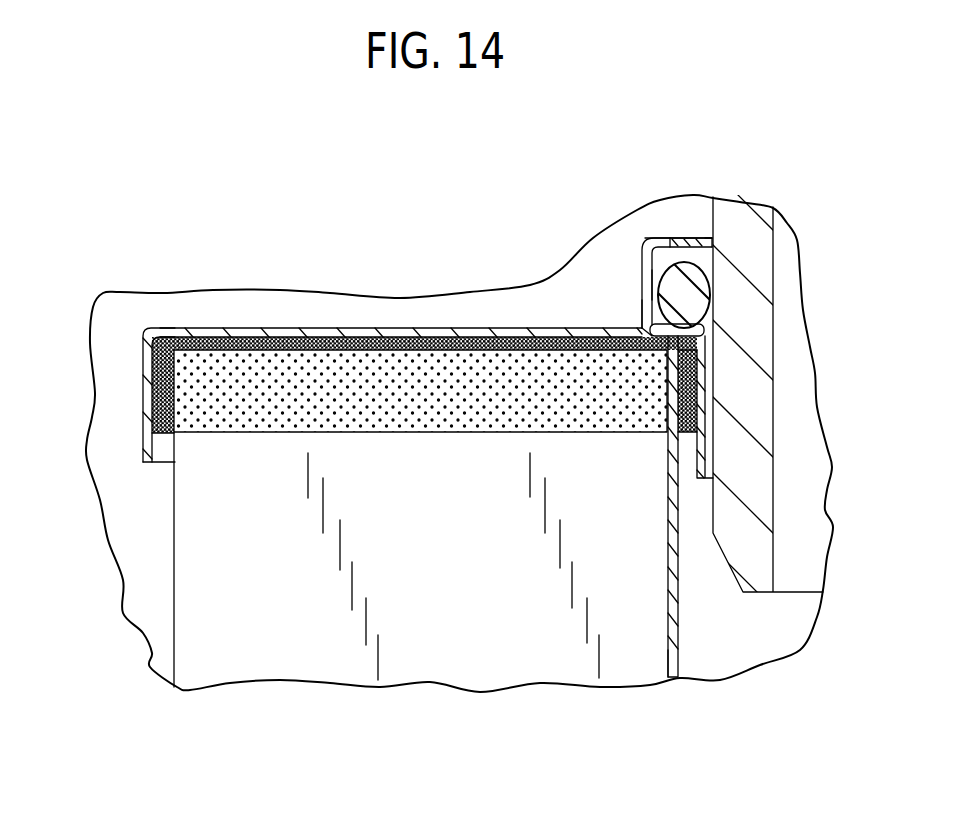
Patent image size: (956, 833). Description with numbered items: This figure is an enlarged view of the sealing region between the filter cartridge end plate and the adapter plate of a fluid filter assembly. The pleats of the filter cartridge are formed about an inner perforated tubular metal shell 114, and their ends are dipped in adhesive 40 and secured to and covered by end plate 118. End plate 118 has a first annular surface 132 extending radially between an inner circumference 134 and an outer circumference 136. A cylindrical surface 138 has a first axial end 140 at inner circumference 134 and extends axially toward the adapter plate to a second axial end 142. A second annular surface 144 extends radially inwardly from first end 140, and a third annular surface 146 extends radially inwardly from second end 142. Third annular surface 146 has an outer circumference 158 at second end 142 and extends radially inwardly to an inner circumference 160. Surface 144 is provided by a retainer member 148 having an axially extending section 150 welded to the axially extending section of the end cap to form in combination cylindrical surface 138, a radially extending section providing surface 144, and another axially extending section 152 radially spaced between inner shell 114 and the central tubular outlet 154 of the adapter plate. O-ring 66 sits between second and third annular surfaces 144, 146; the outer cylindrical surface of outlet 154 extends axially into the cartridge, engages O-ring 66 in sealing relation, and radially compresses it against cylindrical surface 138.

The end plate 118 is at (147, 327).
The outer circumference 136 is at (150, 333).
The first annular surface 132 is at (400, 328).
The inner circumference 134 is at (640, 322).
The adhesive 40 is at (408, 432).
The second axial end 142 is at (644, 257).
The first axial end 140 is at (643, 316).
The cylindrical surface 138 is at (652, 287).
The outer circumference 158 is at (655, 238).
The third annular surface 146 is at (684, 242).
The inner circumference 160 is at (710, 240).
The O-ring 66 is at (688, 303).
The retainer member 148 is at (704, 338).
The axially extending section 150 is at (650, 330).
The second annular surface 144 is at (668, 342).
The axially extending section 152 is at (696, 458).
The central tubular outlet 154 is at (758, 533).
The inner perforated tubular metal shell 114 is at (680, 637).